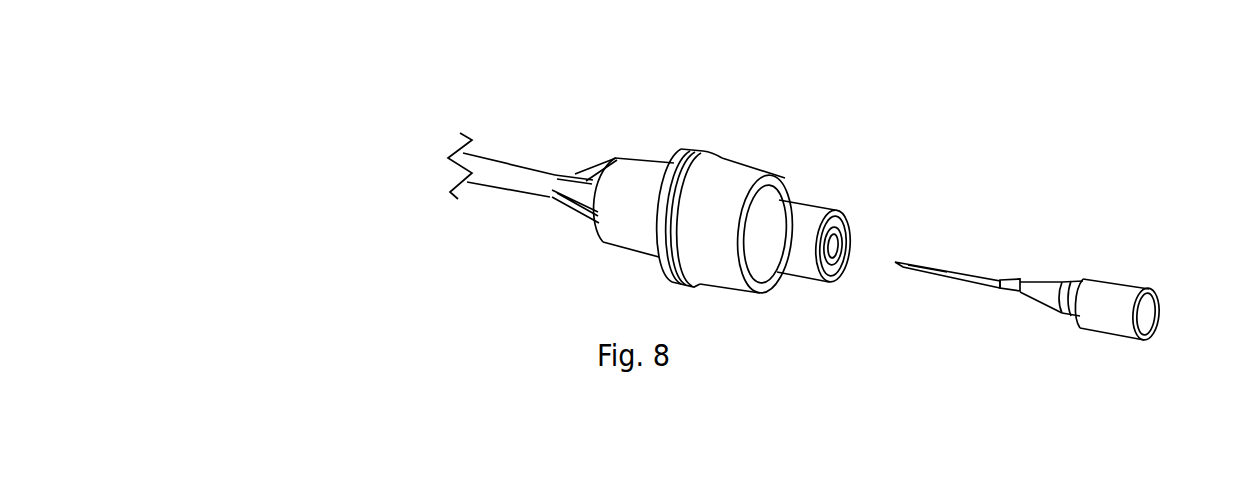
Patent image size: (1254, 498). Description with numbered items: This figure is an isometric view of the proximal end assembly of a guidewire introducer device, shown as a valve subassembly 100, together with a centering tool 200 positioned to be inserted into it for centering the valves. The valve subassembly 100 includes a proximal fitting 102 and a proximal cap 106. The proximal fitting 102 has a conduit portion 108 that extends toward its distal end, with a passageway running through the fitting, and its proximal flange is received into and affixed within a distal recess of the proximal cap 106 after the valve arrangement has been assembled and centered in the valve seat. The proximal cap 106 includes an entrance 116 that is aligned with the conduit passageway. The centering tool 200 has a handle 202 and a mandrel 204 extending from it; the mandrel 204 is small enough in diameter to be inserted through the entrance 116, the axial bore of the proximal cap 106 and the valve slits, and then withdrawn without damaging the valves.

The valve subassembly 100 is at (661, 125).
The proximal fitting 102 is at (650, 155).
The proximal cap 106 is at (795, 170).
The conduit portion 108 is at (537, 165).
The entrance 116 is at (838, 245).
The centering tool 200 is at (1127, 275).
The handle 202 is at (1110, 330).
The mandrel 204 is at (972, 282).